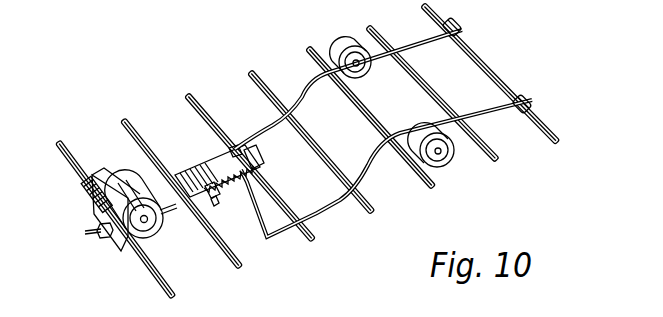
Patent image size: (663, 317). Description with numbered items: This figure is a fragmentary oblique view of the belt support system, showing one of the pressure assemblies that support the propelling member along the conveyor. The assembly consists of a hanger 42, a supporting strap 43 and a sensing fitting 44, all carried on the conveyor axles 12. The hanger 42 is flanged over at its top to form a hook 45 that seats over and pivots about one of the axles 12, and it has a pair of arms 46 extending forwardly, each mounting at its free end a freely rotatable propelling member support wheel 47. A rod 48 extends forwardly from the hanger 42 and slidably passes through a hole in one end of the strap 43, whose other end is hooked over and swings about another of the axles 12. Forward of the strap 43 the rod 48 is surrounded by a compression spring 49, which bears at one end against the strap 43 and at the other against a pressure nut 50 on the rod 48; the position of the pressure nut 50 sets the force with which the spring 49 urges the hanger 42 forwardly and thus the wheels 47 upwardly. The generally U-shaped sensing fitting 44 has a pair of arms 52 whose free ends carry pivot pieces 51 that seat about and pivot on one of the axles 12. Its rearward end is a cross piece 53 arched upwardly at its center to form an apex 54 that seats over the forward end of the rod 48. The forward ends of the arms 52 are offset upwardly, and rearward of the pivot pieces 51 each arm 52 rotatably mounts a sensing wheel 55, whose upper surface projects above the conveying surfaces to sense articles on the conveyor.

The axle 12 is at (72, 156).
The hanger 42 is at (95, 211).
The supporting strap 43 is at (203, 158).
The sensing fitting 44 is at (311, 80).
The hook 45 is at (88, 186).
The arms 46 is at (137, 227).
The propelling member support wheel 47 is at (143, 178).
The rod 48 is at (246, 192).
The compression spring 49 is at (214, 206).
The pressure nut 50 is at (211, 194).
The pivot pieces 51 is at (459, 25).
The arms 52 is at (414, 45).
The cross piece 53 is at (262, 226).
The apex 54 is at (258, 172).
The sensing wheel 55 is at (366, 74).